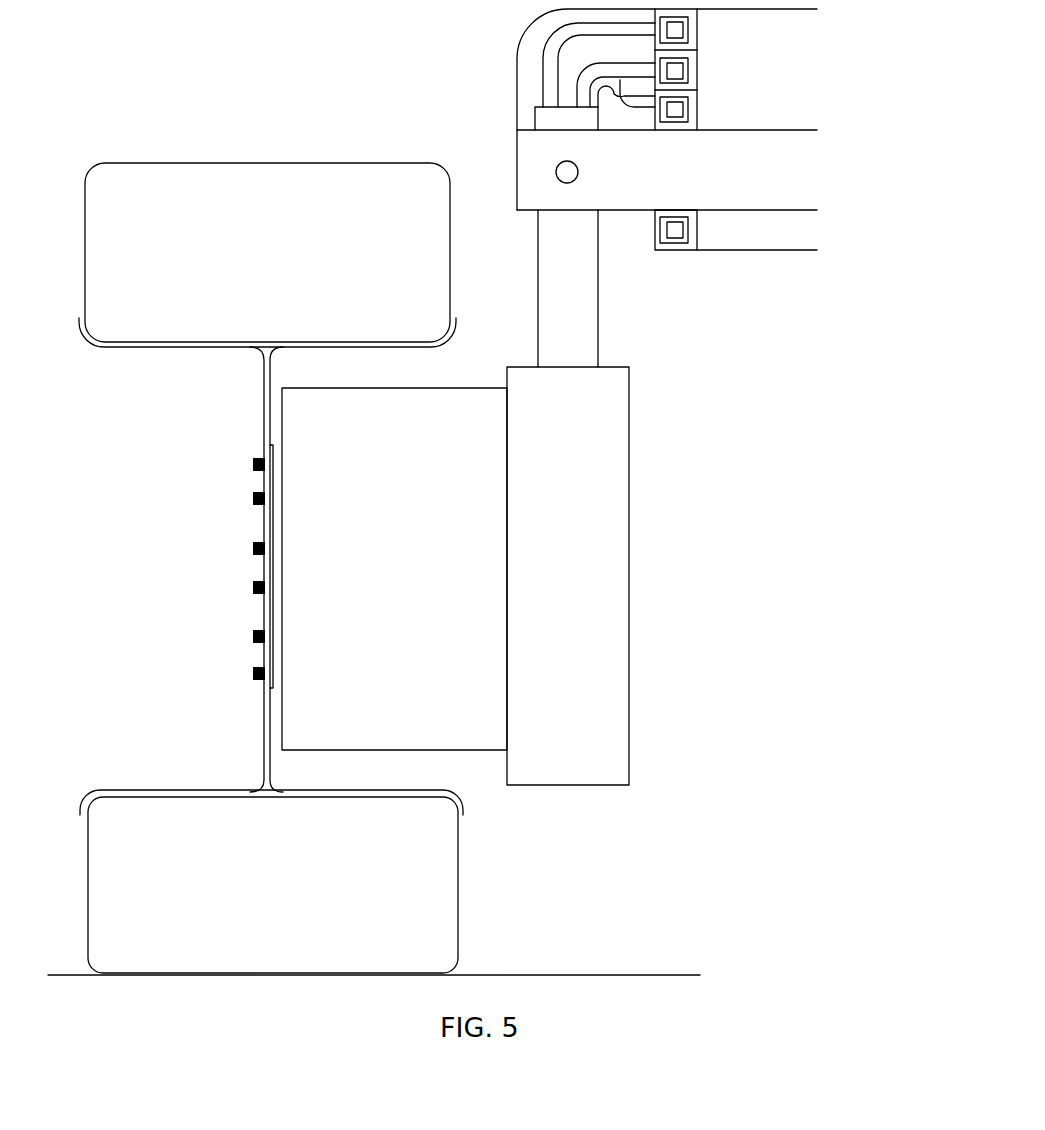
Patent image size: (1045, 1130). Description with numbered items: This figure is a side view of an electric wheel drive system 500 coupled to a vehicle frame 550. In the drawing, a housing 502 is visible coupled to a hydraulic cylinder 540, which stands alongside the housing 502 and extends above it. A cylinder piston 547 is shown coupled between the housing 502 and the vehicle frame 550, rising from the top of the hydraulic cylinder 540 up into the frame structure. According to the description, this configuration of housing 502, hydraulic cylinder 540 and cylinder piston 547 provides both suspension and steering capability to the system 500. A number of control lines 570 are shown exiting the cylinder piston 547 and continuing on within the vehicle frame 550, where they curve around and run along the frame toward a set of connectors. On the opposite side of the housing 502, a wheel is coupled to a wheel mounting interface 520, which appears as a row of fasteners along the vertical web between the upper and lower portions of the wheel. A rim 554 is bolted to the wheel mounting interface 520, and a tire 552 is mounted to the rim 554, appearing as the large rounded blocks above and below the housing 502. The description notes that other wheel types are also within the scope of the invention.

The electric wheel drive system 500 is at (432, 537).
The housing 502 is at (437, 723).
The wheel mounting interface 520 is at (255, 574).
The hydraulic cylinder 540 is at (580, 512).
The cylinder piston 547 is at (578, 322).
The vehicle frame 550 is at (663, 183).
The tire 552 is at (243, 183).
The rim 554 is at (195, 347).
The control lines 570 is at (562, 52).